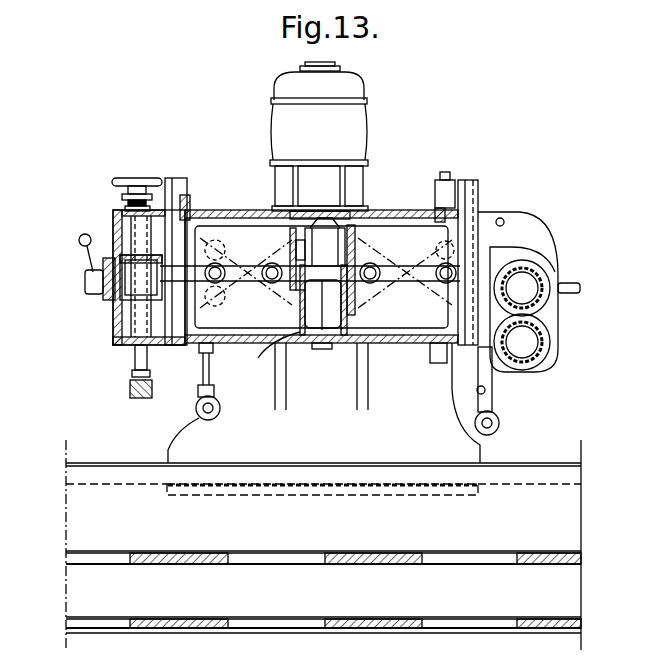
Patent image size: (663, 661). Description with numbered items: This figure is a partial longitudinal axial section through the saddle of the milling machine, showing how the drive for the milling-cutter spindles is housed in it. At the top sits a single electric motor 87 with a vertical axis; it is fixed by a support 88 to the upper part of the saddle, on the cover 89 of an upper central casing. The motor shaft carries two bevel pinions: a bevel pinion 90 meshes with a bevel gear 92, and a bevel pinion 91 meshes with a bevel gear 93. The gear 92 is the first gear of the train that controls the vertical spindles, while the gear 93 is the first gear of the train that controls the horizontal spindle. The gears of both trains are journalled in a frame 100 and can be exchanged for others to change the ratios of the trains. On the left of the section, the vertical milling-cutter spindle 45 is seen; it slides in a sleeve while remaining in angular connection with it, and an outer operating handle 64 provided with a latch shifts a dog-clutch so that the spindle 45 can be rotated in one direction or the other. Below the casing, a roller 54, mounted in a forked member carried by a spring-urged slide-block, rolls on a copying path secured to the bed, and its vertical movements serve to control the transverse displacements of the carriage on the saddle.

The electric motor 87 is at (283, 140).
The support 88 is at (352, 192).
The cover 89 is at (408, 210).
The bevel pinion 91 is at (282, 207).
The bevel gear 93 is at (350, 256).
The bevel gear 92 is at (298, 285).
The bevel pinion 90 is at (323, 315).
The frame 100 is at (272, 333).
The roller 54 is at (218, 414).
The milling-cutter spindle 45 is at (140, 360).
The operating handle 64 is at (88, 268).